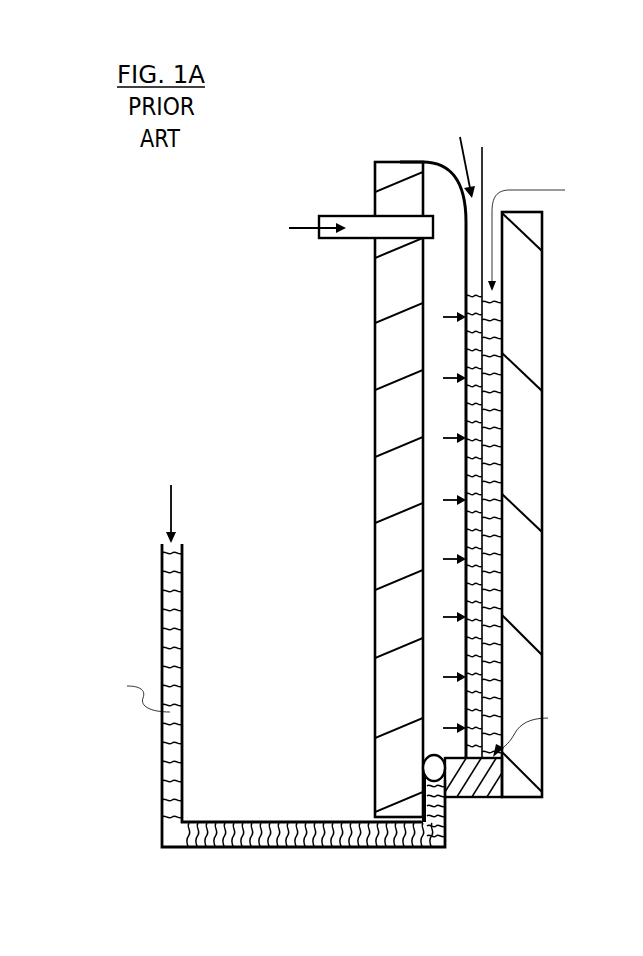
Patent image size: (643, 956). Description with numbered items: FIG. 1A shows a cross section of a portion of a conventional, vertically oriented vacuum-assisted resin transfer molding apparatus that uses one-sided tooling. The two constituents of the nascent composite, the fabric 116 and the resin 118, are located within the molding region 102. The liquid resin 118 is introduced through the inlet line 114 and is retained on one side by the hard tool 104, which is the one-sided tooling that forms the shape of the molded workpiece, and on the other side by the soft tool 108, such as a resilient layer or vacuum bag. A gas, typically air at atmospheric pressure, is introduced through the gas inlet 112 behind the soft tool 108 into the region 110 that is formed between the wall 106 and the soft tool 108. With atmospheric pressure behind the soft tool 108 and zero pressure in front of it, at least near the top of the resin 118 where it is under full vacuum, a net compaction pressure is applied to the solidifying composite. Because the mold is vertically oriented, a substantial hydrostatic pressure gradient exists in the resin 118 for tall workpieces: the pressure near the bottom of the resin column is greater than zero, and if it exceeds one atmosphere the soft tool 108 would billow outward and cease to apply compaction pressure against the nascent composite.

The molding region 102 is at (507, 88).
The hard tool 104 is at (541, 609).
The wall 106 is at (390, 356).
The soft tool 108 is at (437, 161).
The region 110 is at (428, 418).
The gas inlet 112 is at (356, 216).
The inlet line 114 is at (306, 848).
The fabric 116 is at (484, 181).
The resin 118 is at (492, 477).